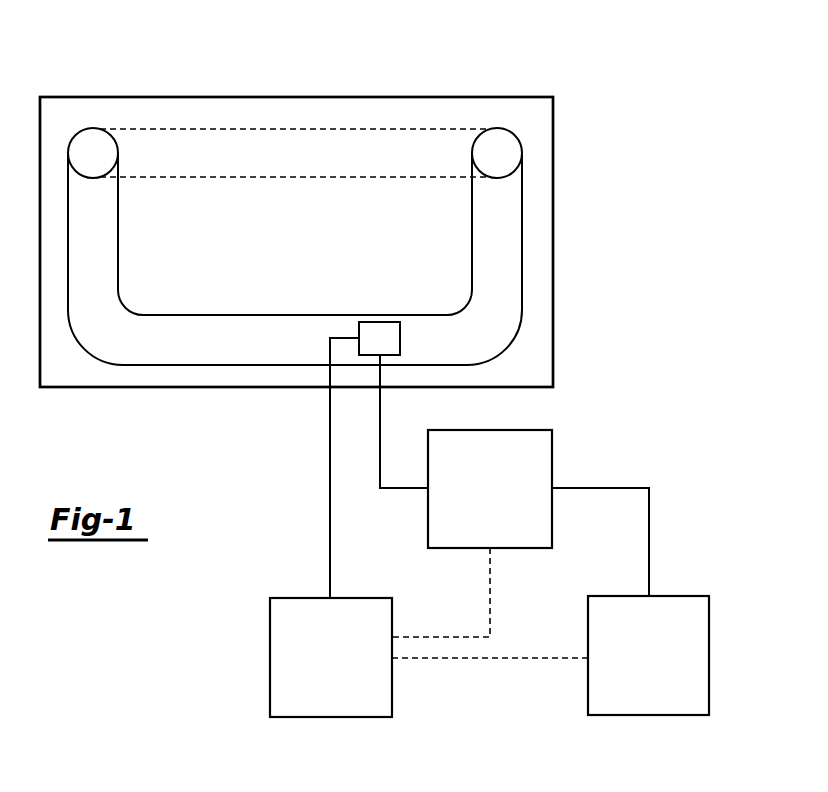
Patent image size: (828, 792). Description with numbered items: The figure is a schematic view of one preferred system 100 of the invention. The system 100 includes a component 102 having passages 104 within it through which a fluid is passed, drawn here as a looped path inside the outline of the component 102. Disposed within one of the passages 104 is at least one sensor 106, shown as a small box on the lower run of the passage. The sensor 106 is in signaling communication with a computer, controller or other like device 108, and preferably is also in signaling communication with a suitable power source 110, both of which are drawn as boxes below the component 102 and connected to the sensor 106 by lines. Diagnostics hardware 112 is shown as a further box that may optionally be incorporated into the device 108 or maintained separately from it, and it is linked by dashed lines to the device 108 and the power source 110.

The system 100 is at (403, 78).
The component 102 is at (538, 259).
The passages 104 is at (220, 345).
The sensor 106 is at (383, 328).
The computer, controller or other like device 108 is at (536, 452).
The power source 110 is at (282, 669).
The diagnostics hardware 112 is at (623, 700).